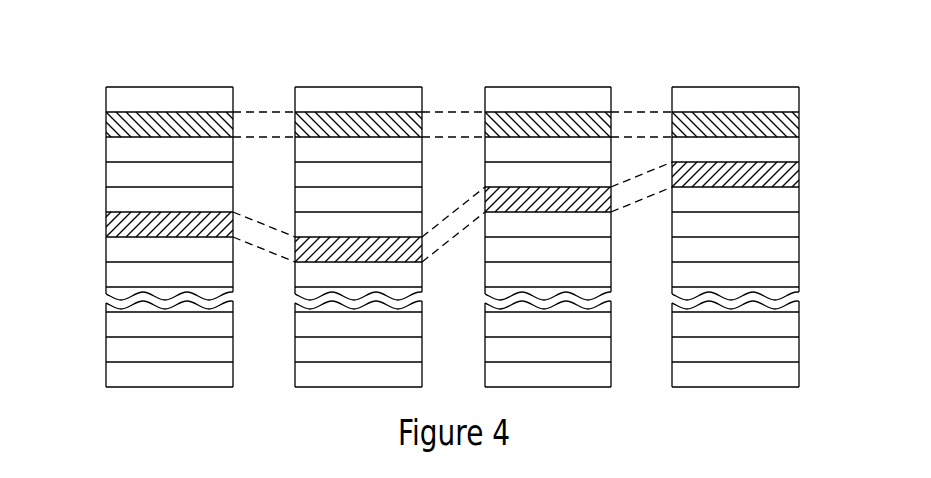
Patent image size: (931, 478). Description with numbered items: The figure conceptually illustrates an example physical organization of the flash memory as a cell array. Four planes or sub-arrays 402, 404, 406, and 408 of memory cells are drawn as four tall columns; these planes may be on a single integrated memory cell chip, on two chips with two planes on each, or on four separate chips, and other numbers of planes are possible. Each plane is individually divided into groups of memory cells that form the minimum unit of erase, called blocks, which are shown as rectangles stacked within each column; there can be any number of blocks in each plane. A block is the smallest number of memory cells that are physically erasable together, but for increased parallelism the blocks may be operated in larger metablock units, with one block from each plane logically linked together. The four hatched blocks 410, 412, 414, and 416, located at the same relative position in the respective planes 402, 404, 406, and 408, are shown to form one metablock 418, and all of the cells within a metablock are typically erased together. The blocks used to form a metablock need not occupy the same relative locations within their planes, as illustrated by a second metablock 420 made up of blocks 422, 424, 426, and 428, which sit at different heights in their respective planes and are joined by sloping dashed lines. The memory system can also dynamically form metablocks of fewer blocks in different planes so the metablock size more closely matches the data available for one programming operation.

The plane 402 is at (168, 80).
The plane 404 is at (359, 80).
The plane 406 is at (547, 80).
The plane 408 is at (745, 80).
The block 410 is at (150, 127).
The block 412 is at (337, 125).
The block 414 is at (530, 125).
The block 416 is at (765, 123).
The metablock 418 is at (647, 120).
The second metablock 420 is at (642, 185).
The block 422 is at (147, 225).
The block 424 is at (333, 245).
The block 426 is at (535, 195).
The block 428 is at (764, 171).